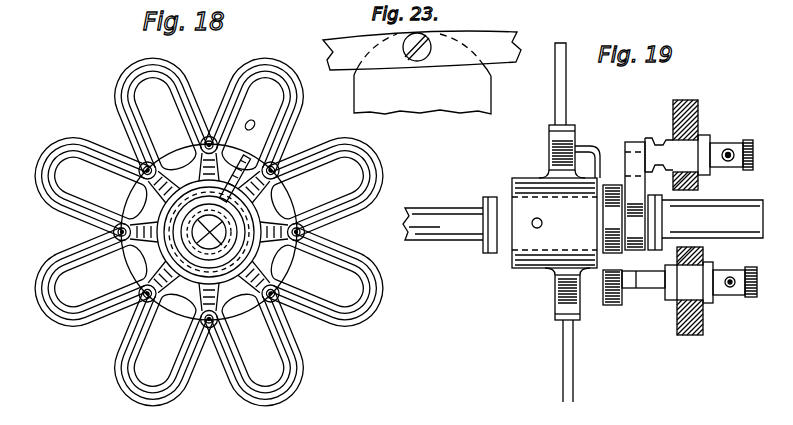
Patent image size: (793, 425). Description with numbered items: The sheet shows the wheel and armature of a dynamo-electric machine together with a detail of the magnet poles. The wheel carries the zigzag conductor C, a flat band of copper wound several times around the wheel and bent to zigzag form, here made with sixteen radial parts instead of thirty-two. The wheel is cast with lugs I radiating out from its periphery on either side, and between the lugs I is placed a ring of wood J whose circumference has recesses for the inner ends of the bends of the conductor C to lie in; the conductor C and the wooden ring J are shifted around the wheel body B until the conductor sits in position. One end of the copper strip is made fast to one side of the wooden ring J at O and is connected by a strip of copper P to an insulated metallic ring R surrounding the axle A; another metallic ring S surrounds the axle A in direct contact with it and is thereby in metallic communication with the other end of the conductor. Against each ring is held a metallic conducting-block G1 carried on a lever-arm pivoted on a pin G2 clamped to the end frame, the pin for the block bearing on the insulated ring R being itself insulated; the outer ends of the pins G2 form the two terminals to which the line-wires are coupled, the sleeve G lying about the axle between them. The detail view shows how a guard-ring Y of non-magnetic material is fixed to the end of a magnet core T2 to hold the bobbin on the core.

In FIG. 18, the axle A is at (209, 232).
In FIG. 19, the axle A is at (583, 225).
In FIG. 18, the hub / armature body B is at (209, 232).
In FIG. 19, the hub / armature body B is at (554, 222).
In FIG. 18, the zigzag conductor C is at (209, 232).
In FIG. 19, the zigzag conductor C is at (570, 222).
In FIG. 18, the lugs I is at (209, 232).
In FIG. 19, the lugs I is at (552, 156).
In FIG. 18, the ring of wood J is at (209, 232).
In FIG. 18, the insulated metallic ring R is at (231, 178).
In FIG. 19, the insulated metallic ring R is at (612, 209).
In FIG. 18, the fastening point of the conductor end O is at (239, 152).
In FIG. 19, the strip of copper P is at (598, 148).
In FIG. 19, the metallic ring S is at (643, 272).
In FIG. 19, the sleeve G is at (643, 196).
In FIG. 19, the metallic conducting-block G1 is at (603, 291).
In FIG. 19, the pin G2 is at (701, 217).
In FIG. 23, the rings Y is at (422, 50).
In FIG. 23, the core T2 is at (422, 74).